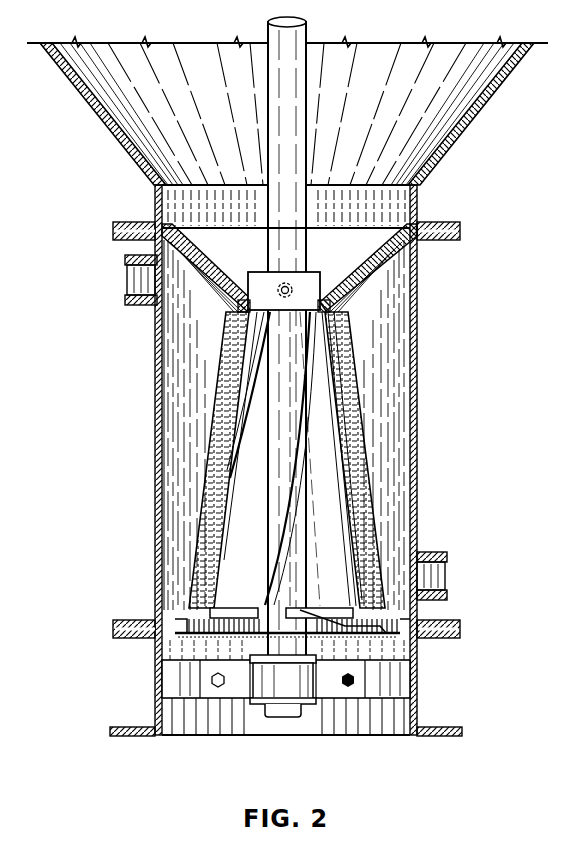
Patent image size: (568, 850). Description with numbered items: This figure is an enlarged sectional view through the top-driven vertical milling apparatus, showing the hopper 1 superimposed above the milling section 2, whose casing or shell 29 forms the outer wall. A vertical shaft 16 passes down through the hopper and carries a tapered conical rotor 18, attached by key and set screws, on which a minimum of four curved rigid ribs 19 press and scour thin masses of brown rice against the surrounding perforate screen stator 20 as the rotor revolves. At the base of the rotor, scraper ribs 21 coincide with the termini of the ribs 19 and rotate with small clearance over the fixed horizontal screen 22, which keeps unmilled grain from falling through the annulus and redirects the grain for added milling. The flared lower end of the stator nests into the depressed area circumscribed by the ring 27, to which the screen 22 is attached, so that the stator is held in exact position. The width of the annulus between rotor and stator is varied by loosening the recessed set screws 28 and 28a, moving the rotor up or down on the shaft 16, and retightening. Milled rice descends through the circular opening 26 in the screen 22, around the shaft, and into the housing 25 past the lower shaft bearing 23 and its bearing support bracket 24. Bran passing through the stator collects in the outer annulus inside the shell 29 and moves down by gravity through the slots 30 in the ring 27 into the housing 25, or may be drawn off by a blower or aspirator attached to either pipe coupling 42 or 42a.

The hopper 1 is at (474, 118).
The milling section 2 is at (418, 372).
The shaft 16 is at (306, 121).
The tapered conical rotor 18 is at (236, 530).
The curved rigid ribs 19 is at (286, 513).
The perforate screen stator 20 is at (365, 502).
The scraper ribs 21 is at (250, 618).
The horizontal screen 22 is at (368, 637).
The lower shaft bearing 23 is at (255, 704).
The bearing support bracket 24 is at (337, 692).
The housing 25 is at (417, 710).
The circular opening 26 is at (317, 639).
The ring 27 is at (418, 652).
The recessed set screw 28 is at (302, 290).
The recessed set screw 28a is at (243, 292).
The casing or shell 29 is at (160, 392).
The slots 30 is at (158, 644).
The pipe coupling 42 is at (436, 552).
The pipe coupling 42a is at (126, 298).